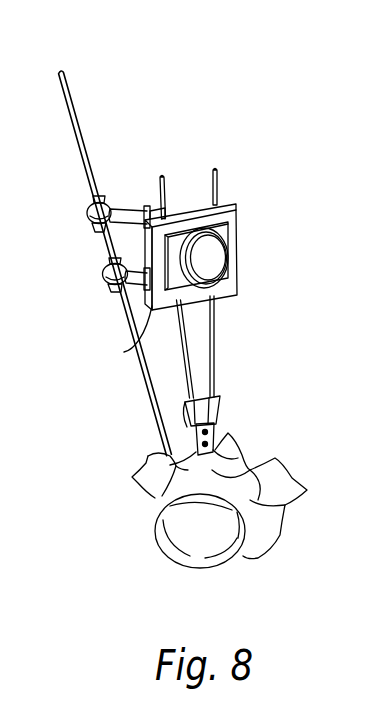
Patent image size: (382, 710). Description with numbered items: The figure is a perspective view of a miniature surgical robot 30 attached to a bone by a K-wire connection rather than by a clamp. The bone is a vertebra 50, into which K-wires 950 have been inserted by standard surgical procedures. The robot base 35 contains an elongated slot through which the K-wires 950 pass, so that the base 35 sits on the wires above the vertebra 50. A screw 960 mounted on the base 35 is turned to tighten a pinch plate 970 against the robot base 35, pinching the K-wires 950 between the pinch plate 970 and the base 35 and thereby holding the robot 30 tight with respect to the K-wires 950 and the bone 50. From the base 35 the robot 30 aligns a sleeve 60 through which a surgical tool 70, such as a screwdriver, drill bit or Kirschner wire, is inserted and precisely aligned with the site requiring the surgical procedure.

The robot 30 is at (244, 181).
The base 35 is at (236, 226).
The vertebra 50 is at (288, 477).
The sleeve 60 is at (103, 241).
The surgical tool 70 is at (59, 74).
The K-wires 950 is at (188, 360).
The screw 960 is at (208, 258).
The pinch plate 970 is at (133, 344).